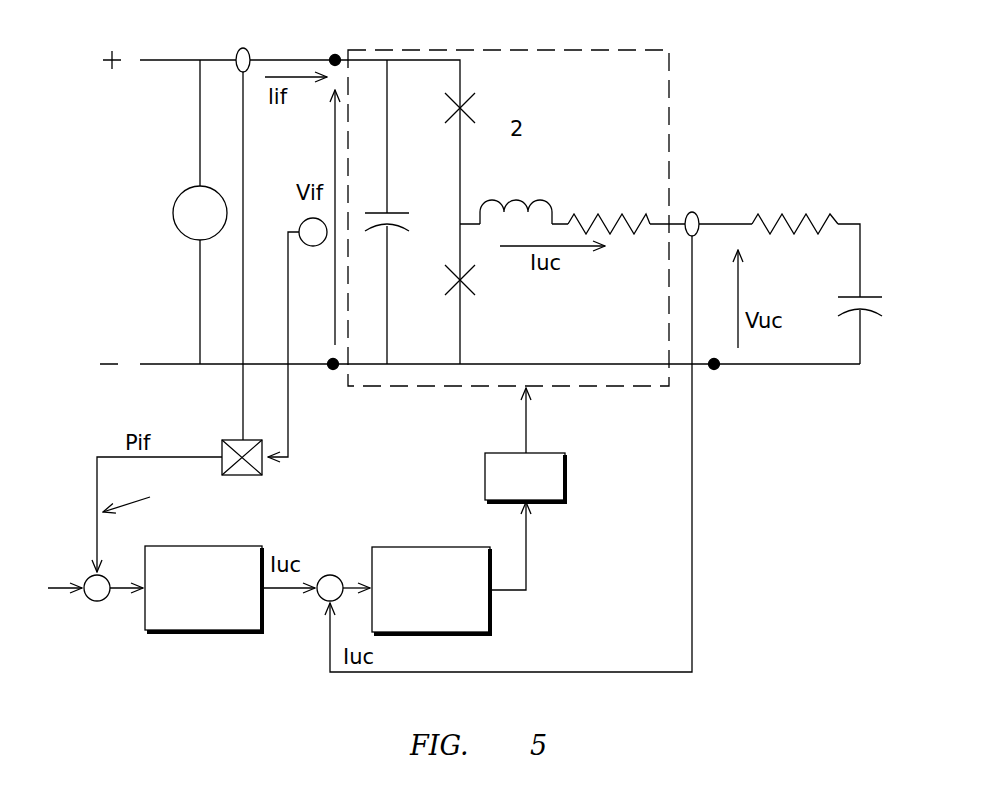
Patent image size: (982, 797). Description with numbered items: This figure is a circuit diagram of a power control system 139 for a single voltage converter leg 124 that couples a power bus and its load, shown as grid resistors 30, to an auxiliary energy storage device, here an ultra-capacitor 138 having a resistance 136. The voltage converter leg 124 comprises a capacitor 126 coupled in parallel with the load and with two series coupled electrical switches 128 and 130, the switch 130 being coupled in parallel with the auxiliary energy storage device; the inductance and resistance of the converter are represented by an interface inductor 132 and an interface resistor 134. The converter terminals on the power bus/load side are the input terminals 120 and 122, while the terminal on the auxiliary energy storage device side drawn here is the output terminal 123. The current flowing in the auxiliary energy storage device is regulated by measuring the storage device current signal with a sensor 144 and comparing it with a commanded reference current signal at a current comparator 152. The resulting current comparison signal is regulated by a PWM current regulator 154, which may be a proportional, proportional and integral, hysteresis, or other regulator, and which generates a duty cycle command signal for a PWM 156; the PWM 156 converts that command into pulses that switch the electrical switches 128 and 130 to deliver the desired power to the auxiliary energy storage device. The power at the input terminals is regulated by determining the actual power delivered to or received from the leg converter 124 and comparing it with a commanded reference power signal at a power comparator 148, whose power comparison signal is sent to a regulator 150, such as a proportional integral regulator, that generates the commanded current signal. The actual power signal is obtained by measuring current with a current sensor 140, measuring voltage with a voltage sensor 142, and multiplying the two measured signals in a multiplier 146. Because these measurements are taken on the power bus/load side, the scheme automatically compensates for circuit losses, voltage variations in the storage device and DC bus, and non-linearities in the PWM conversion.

The grid resistors 30 is at (188, 190).
The input terminal 120 is at (333, 55).
The input terminal 122 is at (333, 370).
The output terminal 123 is at (714, 370).
The voltage converter leg 124 is at (605, 50).
The capacitor 126 is at (387, 208).
The electrical switch 128 is at (468, 106).
The electrical switch 130 is at (468, 284).
The interface inductor 132 is at (543, 200).
The interface resistor 134 is at (632, 215).
The resistance 136 is at (822, 218).
The ultra-capacitor 138 is at (852, 297).
The power control system 139 is at (148, 499).
The current sensor 140 is at (243, 48).
The voltage sensor 142 is at (318, 246).
The sensor 144 is at (692, 212).
The multiplier 146 is at (228, 440).
The power comparator 148 is at (105, 600).
The regulator 150 is at (205, 546).
The current comparator 152 is at (333, 577).
The PWM current regulator 154 is at (400, 547).
The PWM 156 is at (548, 453).